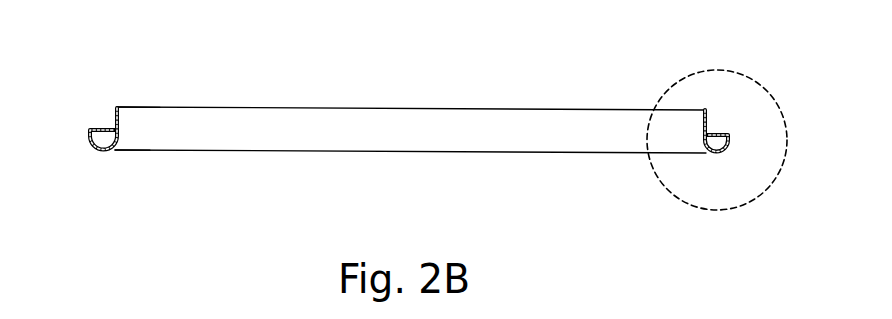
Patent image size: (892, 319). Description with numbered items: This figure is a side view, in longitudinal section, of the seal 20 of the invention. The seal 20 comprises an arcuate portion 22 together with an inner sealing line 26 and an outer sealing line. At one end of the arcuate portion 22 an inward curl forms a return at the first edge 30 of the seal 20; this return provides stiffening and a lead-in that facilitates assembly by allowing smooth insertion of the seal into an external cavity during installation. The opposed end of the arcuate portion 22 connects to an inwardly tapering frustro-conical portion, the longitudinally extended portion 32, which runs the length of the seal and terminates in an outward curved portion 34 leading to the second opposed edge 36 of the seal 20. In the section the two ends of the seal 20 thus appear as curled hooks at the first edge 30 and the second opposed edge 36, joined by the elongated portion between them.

The seal 20 is at (416, 108).
The arcuate portion 22 is at (107, 151).
The inner sealing line 26 is at (386, 134).
The first edge 30 is at (103, 127).
The longitudinally extended portion 32 is at (240, 142).
The outward curved portion 34 is at (202, 117).
The second opposed edge 36 is at (155, 105).